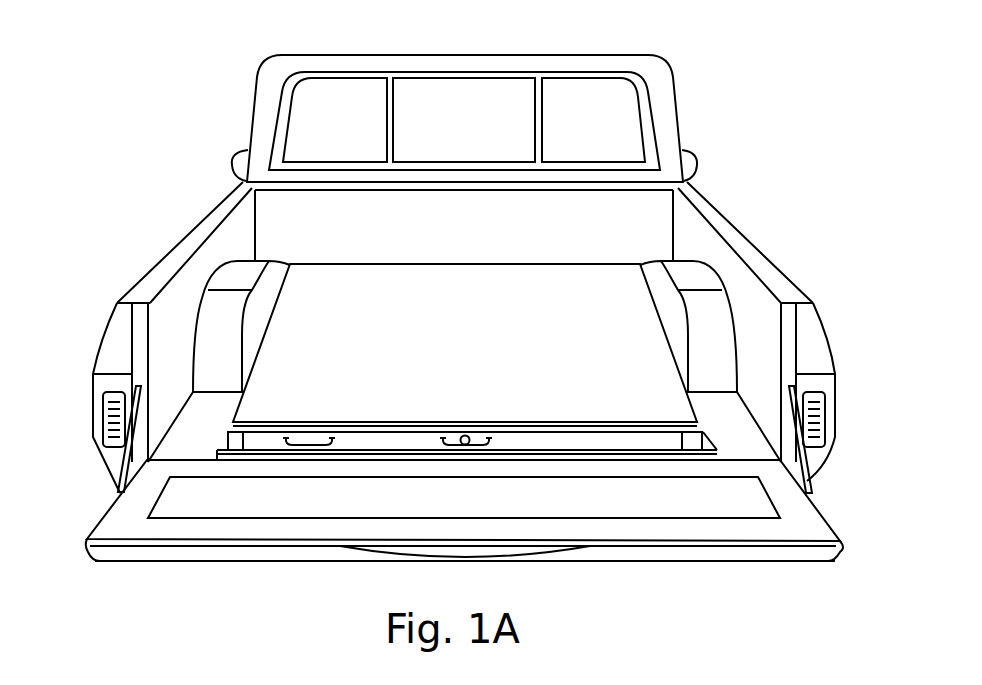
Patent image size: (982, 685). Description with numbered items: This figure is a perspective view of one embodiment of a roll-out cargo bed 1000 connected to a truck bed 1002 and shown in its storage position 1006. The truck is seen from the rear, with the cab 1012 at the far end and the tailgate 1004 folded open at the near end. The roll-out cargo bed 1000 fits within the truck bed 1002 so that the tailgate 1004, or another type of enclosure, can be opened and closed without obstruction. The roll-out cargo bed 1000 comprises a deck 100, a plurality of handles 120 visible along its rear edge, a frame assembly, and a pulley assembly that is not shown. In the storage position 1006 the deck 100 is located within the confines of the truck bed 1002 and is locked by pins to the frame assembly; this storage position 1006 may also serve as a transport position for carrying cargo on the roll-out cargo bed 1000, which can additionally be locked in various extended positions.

The roll-out cargo bed 1000 is at (441, 335).
The cab 1012 is at (558, 65).
The truck bed 1002 is at (188, 448).
The deck 100 is at (482, 342).
The handles 120 is at (308, 445).
The tailgate 1004 is at (441, 519).
The storage position 1006 is at (89, 589).